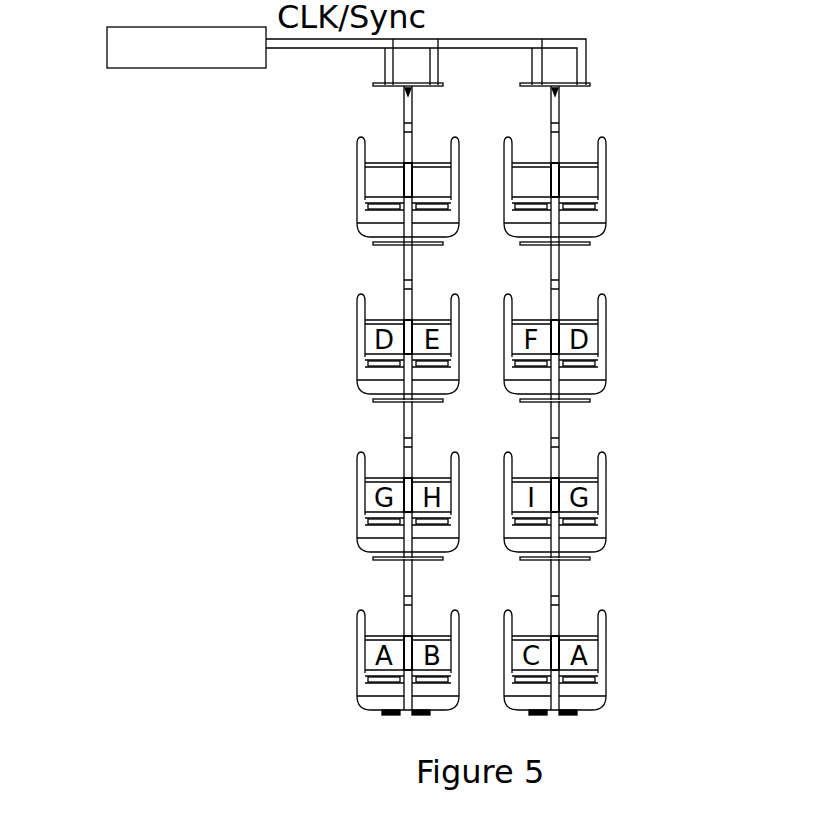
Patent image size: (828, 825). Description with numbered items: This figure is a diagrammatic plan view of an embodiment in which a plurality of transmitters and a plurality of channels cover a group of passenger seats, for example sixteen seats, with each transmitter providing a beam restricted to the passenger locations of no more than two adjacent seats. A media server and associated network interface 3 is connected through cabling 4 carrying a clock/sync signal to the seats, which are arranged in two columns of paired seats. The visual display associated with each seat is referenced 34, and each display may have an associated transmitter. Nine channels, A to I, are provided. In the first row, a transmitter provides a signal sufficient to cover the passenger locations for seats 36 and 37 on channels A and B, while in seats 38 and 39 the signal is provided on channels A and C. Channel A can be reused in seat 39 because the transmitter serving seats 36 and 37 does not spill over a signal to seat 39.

The media server and associated network interface 3 is at (103, 35).
The cabling 4 is at (297, 50).
The visual display 34 is at (590, 84).
The seat 36 is at (386, 131).
The seat 37 is at (445, 104).
The seat 38 is at (541, 104).
The seat 39 is at (587, 104).